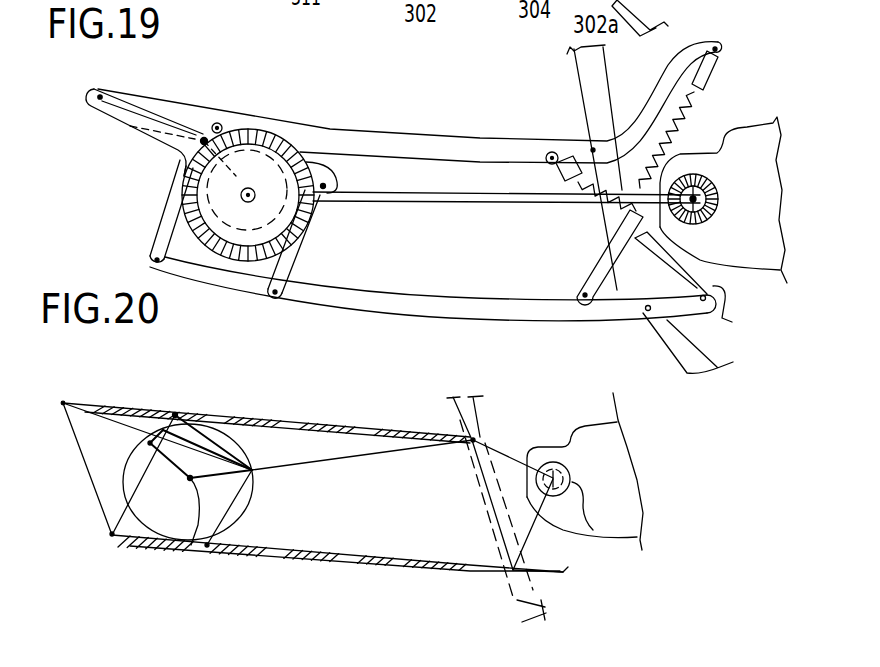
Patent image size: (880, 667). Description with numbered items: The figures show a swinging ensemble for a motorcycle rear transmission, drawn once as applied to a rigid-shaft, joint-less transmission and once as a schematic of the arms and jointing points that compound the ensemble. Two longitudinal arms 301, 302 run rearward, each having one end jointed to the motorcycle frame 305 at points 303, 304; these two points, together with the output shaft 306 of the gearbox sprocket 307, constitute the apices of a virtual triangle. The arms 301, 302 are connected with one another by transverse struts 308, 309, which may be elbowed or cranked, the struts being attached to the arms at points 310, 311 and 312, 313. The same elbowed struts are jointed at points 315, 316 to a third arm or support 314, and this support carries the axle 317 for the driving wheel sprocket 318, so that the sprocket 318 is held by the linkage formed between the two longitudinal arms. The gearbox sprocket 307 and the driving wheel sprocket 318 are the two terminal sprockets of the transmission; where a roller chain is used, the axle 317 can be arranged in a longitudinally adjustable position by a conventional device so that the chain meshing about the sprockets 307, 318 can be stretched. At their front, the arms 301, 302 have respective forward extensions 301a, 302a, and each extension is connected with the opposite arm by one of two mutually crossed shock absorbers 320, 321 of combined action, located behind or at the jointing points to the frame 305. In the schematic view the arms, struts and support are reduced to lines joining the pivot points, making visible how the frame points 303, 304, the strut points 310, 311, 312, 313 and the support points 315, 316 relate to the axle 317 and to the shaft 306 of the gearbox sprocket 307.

In FIG. 19, the longitudinal arm 301 is at (477, 143).
In FIG. 20, the longitudinal arm 301 is at (350, 448).
In FIG. 19, the forward extension 301a is at (713, 40).
In FIG. 19, the longitudinal arm 302 is at (364, 297).
In FIG. 20, the longitudinal arm 302 is at (360, 570).
In FIG. 19, the forward extension 302a is at (732, 318).
In FIG. 19, the jointing point 303 is at (592, 149).
In FIG. 20, the jointing point 303 is at (474, 438).
In FIG. 19, the jointing point 304 is at (646, 310).
In FIG. 20, the jointing point 304 is at (550, 586).
In FIG. 19, the motorcycle frame 305 is at (587, 70).
In FIG. 20, the motorcycle frame 305 is at (522, 606).
In FIG. 19, the output shaft 306 is at (700, 174).
In FIG. 20, the output shaft 306 is at (553, 462).
In FIG. 19, the gearbox sprocket 307 is at (707, 222).
In FIG. 20, the gearbox sprocket 307 is at (545, 485).
In FIG. 19, the transverse strut 308 is at (166, 211).
In FIG. 20, the transverse strut 308 is at (143, 475).
In FIG. 19, the transverse strut 309 is at (292, 258).
In FIG. 20, the transverse strut 309 is at (229, 507).
In FIG. 19, the jointing point 310 is at (221, 126).
In FIG. 20, the jointing point 310 is at (175, 413).
In FIG. 19, the jointing point 311 is at (283, 289).
In FIG. 20, the jointing point 311 is at (210, 558).
In FIG. 19, the jointing point 312 is at (102, 91).
In FIG. 20, the jointing point 312 is at (64, 401).
In FIG. 19, the jointing point 313 is at (152, 260).
In FIG. 20, the jointing point 313 is at (112, 536).
In FIG. 19, the third arm or support 314 is at (190, 180).
In FIG. 20, the third arm or support 314 is at (200, 445).
In FIG. 19, the jointing point 315 is at (329, 184).
In FIG. 20, the jointing point 315 is at (304, 421).
In FIG. 19, the jointing point 316 is at (203, 139).
In FIG. 20, the jointing point 316 is at (150, 443).
In FIG. 19, the axle 317 is at (252, 190).
In FIG. 20, the axle 317 is at (195, 488).
In FIG. 19, the driving wheel sprocket 318 is at (240, 261).
In FIG. 20, the driving wheel sprocket 318 is at (254, 503).
In FIG. 19, the shock absorber 320 is at (696, 101).
In FIG. 19, the shock absorber 321 is at (700, 277).